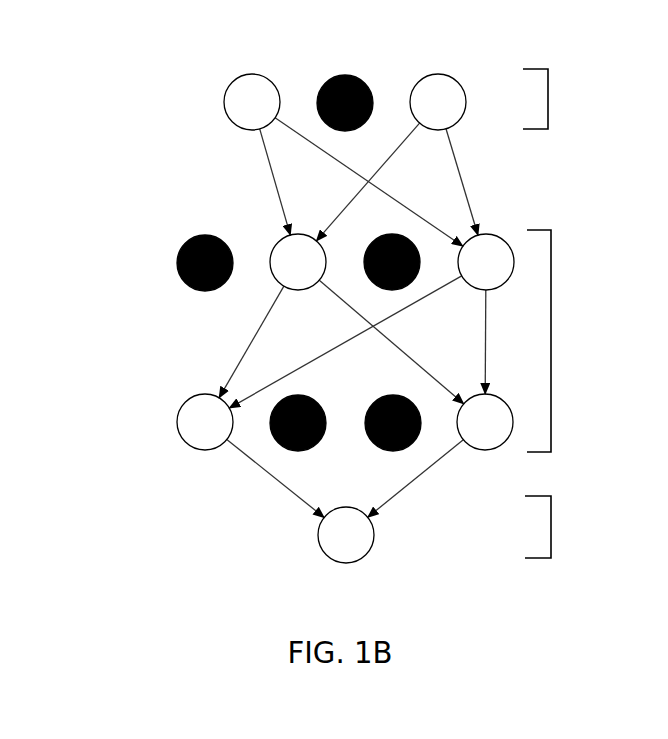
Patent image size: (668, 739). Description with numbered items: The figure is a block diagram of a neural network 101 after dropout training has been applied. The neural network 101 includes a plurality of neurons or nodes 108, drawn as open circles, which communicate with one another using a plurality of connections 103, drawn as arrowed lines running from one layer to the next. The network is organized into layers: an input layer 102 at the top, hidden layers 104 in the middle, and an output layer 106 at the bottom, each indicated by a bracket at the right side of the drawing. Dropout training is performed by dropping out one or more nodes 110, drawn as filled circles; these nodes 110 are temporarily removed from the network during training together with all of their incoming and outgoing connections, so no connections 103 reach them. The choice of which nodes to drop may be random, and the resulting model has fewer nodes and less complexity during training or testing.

The neural network 101 is at (246, 38).
The input layer 102 is at (555, 99).
The connections 103 is at (262, 210).
The hidden layers 104 is at (558, 342).
The output layer 106 is at (558, 527).
The nodes 108 is at (210, 113).
The dropped-out nodes 110 is at (355, 68).